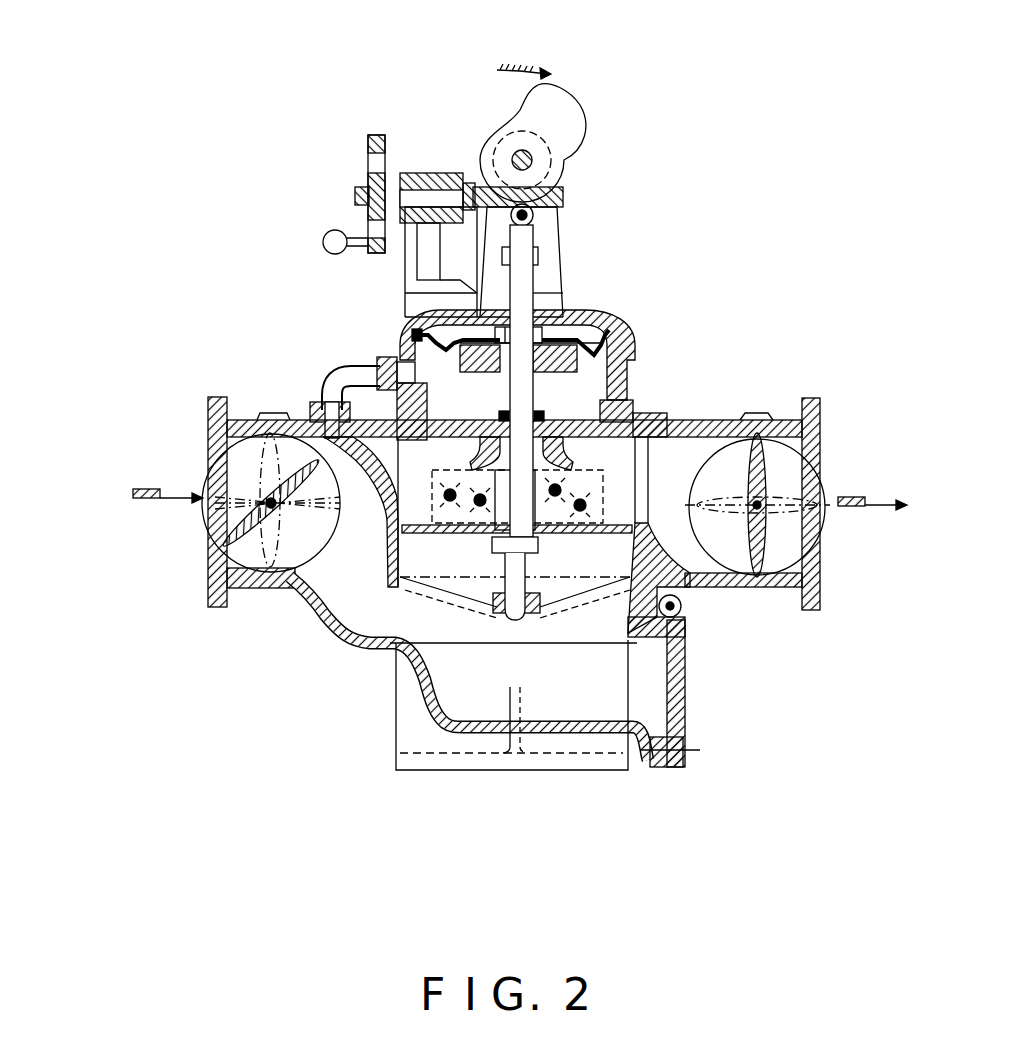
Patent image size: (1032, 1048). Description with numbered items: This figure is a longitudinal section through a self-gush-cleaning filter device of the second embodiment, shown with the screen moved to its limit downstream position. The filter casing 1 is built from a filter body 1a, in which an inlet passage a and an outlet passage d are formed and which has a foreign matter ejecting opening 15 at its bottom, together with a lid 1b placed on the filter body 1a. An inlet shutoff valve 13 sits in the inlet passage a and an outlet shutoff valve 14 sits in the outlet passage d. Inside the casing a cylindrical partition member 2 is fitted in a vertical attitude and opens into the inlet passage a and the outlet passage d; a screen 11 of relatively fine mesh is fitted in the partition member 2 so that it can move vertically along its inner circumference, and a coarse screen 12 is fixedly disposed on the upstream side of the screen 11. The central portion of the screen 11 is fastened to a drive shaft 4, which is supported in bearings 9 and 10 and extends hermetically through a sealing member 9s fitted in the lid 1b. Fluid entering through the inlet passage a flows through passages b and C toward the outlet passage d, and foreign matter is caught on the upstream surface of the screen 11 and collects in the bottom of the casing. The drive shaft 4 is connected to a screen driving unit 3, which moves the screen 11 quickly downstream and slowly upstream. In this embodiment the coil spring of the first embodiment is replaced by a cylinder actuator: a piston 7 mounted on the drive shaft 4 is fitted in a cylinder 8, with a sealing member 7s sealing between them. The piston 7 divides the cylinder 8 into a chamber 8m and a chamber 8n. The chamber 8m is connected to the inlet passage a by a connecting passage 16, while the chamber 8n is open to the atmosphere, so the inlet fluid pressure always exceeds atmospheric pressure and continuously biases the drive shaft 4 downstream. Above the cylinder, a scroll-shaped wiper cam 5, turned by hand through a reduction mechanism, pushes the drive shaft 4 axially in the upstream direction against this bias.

The filter casing 1 is at (333, 657).
The filter body 1a is at (465, 736).
The lid 1b is at (470, 350).
The cylindrical partition member 2 is at (264, 459).
The screen driving unit 3 is at (604, 166).
The drive shaft 4 is at (430, 312).
The wiper cam 5 is at (572, 128).
The piston 7 is at (609, 271).
The sealing member 7s is at (618, 279).
The cylinder 8 is at (645, 312).
The chamber 8n is at (598, 308).
The chamber 8m is at (696, 330).
The bearing 9 is at (662, 397).
The sealing member 9s is at (684, 388).
The bearing 10 is at (476, 536).
The screen 11 is at (517, 659).
The coarse screen 12 is at (516, 686).
The inlet shutoff valve 13 is at (235, 527).
The outlet shutoff valve 14 is at (765, 565).
The foreign matter ejecting opening 15 is at (698, 716).
The connecting passage 16 is at (285, 329).
The inlet passage a is at (240, 483).
The passage b is at (350, 563).
The passage C is at (715, 599).
The outlet passage d is at (790, 540).